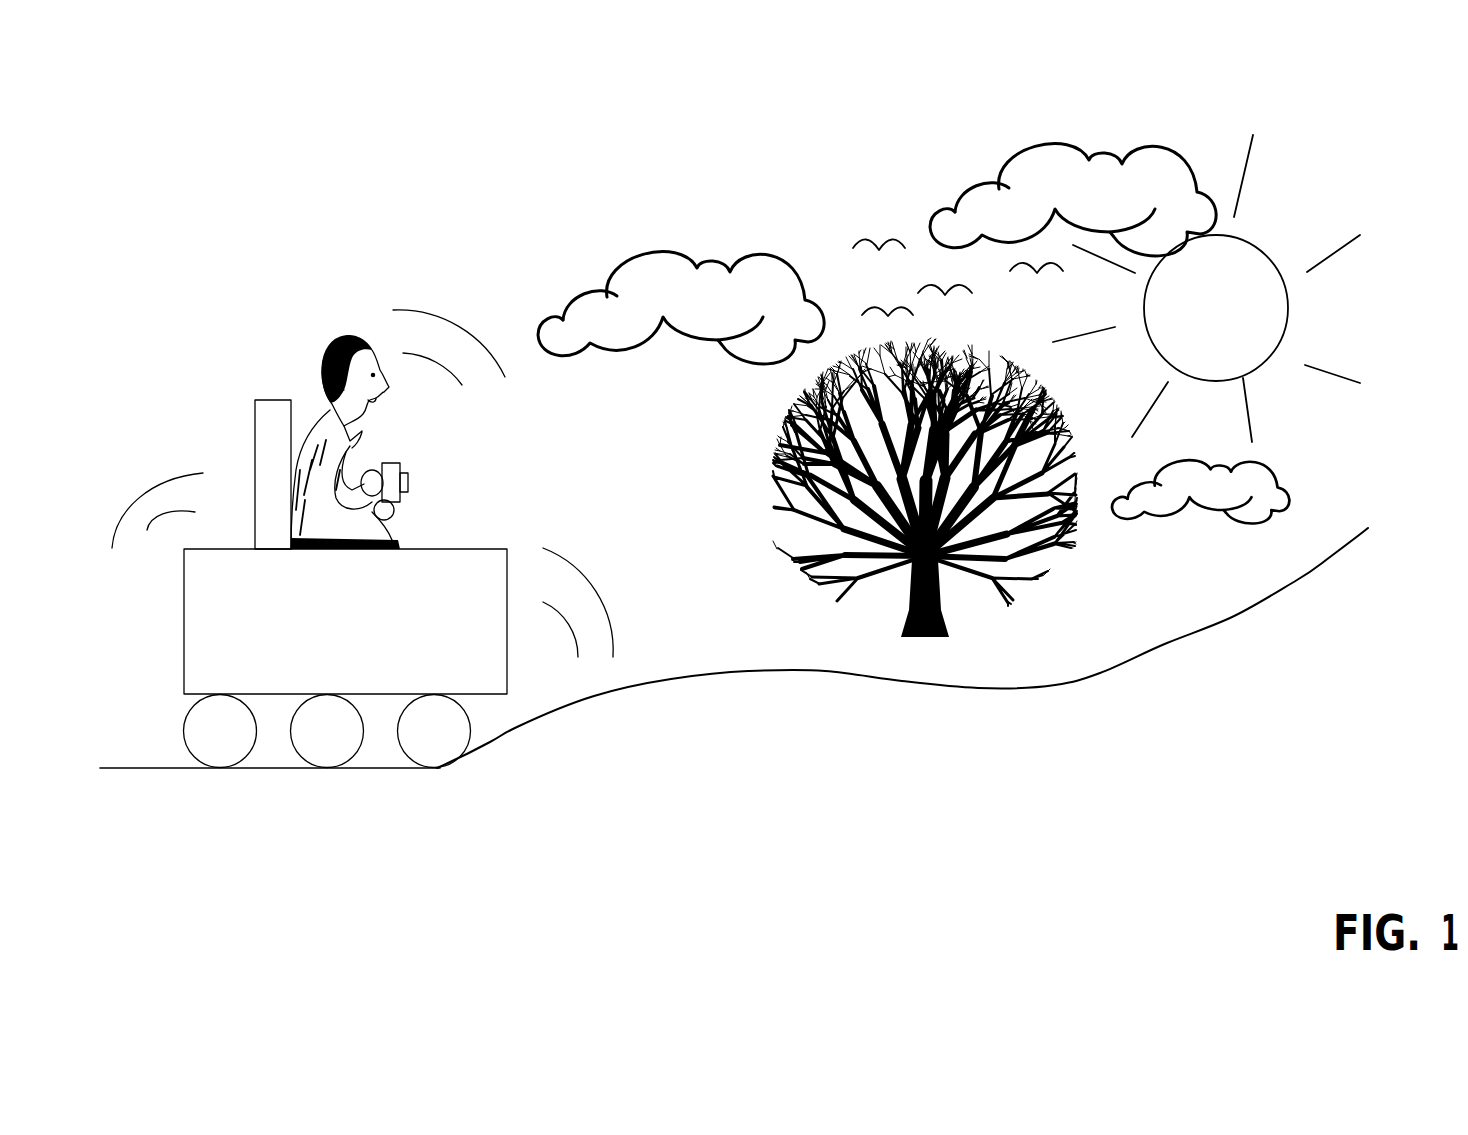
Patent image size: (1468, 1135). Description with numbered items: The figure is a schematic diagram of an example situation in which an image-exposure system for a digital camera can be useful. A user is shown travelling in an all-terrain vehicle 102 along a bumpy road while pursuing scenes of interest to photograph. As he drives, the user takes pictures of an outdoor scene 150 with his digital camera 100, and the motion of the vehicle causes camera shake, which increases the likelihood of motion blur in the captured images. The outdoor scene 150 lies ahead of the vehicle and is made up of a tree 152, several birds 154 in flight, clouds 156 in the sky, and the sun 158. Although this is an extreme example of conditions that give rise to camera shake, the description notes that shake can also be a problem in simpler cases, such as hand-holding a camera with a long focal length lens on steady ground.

The digital camera 100 is at (392, 462).
The all-terrain vehicle 102 is at (470, 547).
The outdoor scene 150 is at (842, 114).
The tree 152 is at (780, 482).
The birds 154 is at (860, 235).
The clouds 156 is at (1048, 142).
The sun 158 is at (1258, 247).